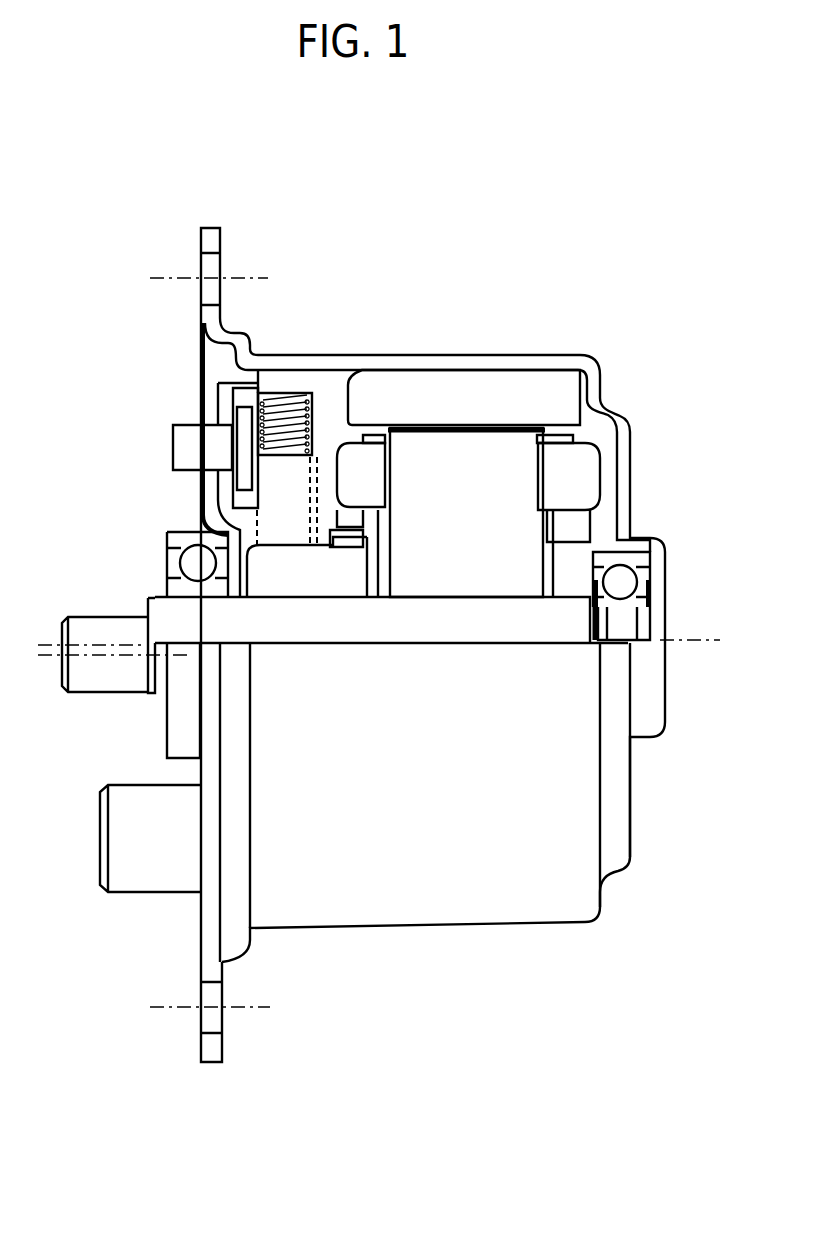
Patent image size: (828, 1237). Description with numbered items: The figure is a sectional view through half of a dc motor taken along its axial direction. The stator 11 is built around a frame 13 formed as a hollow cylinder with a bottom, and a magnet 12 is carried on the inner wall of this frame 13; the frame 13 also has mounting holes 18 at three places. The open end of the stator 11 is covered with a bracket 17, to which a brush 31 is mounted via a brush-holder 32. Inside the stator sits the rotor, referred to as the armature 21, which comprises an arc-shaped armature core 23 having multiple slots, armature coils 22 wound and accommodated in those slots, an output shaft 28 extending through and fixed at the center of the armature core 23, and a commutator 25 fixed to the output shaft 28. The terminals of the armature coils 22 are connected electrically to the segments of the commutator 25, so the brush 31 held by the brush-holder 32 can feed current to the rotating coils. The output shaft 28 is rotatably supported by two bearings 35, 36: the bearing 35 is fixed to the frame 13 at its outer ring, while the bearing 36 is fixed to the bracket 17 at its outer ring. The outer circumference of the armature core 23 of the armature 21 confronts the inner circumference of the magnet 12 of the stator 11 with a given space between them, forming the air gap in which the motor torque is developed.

The stator 11 is at (298, 363).
The magnet 12 is at (502, 385).
The frame 13 is at (395, 365).
The bracket 17 is at (200, 377).
The mounting holes 18 is at (210, 262).
The rotor 21 is at (587, 448).
The armature coils 22 is at (572, 483).
The armature core 23 is at (527, 537).
The commutator 25 is at (288, 560).
The output shaft 28 is at (80, 628).
The brush 31 is at (287, 475).
The brush-holder 32 is at (208, 453).
The bearing 35 is at (620, 578).
The bearing 36 is at (200, 563).